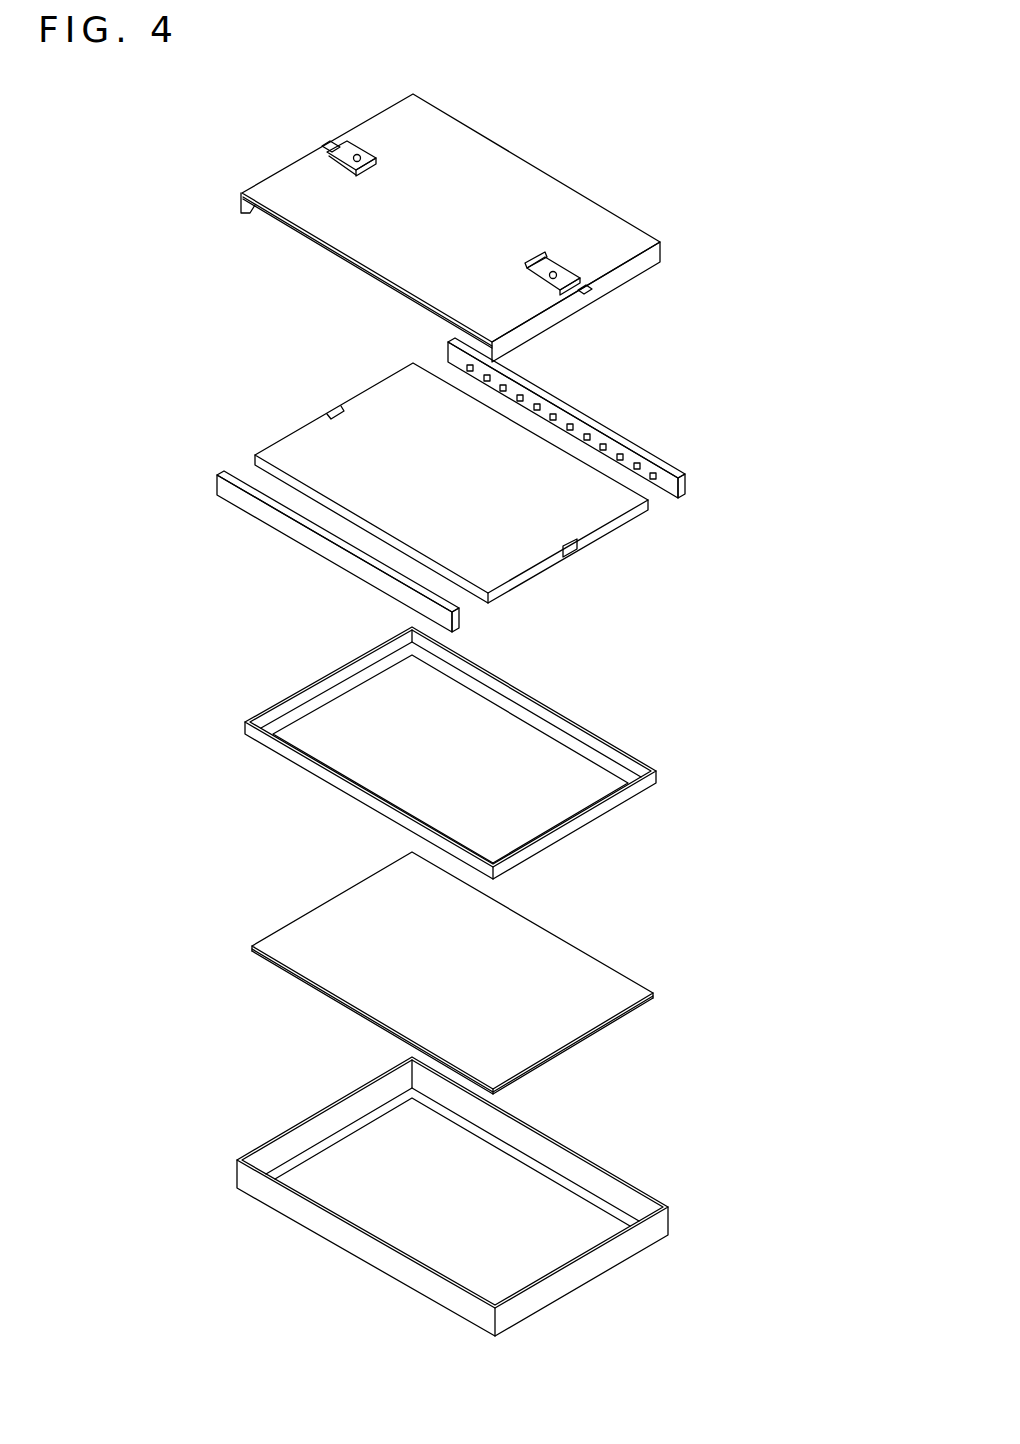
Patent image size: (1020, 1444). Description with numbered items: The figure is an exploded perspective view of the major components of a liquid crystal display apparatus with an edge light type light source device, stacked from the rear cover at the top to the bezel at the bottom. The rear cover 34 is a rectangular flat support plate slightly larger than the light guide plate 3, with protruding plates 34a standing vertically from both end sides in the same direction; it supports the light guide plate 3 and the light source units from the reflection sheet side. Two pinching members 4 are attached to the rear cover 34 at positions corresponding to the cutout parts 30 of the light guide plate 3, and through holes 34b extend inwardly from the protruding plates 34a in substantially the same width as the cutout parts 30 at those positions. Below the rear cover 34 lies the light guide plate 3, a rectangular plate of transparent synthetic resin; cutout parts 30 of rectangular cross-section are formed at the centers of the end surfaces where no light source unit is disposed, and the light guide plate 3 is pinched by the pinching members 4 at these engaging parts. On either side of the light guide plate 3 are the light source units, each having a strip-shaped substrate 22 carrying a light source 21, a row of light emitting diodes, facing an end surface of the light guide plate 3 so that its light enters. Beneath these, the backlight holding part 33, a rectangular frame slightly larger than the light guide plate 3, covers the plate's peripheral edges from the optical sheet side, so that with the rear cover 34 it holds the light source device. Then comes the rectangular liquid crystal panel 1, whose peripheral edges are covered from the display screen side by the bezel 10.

The liquid crystal panel 1 is at (608, 976).
The light guide plate 3 is at (620, 510).
The pinching member 4 is at (355, 148).
The bezel 10 is at (660, 1222).
The light source 21 is at (640, 452).
The substrate 22 is at (217, 487).
The cutout part 30 is at (340, 405).
The backlight holding part 33 is at (662, 776).
The rear cover 34 is at (625, 228).
The protruding plate 34a is at (240, 205).
The through hole 34b is at (330, 147).